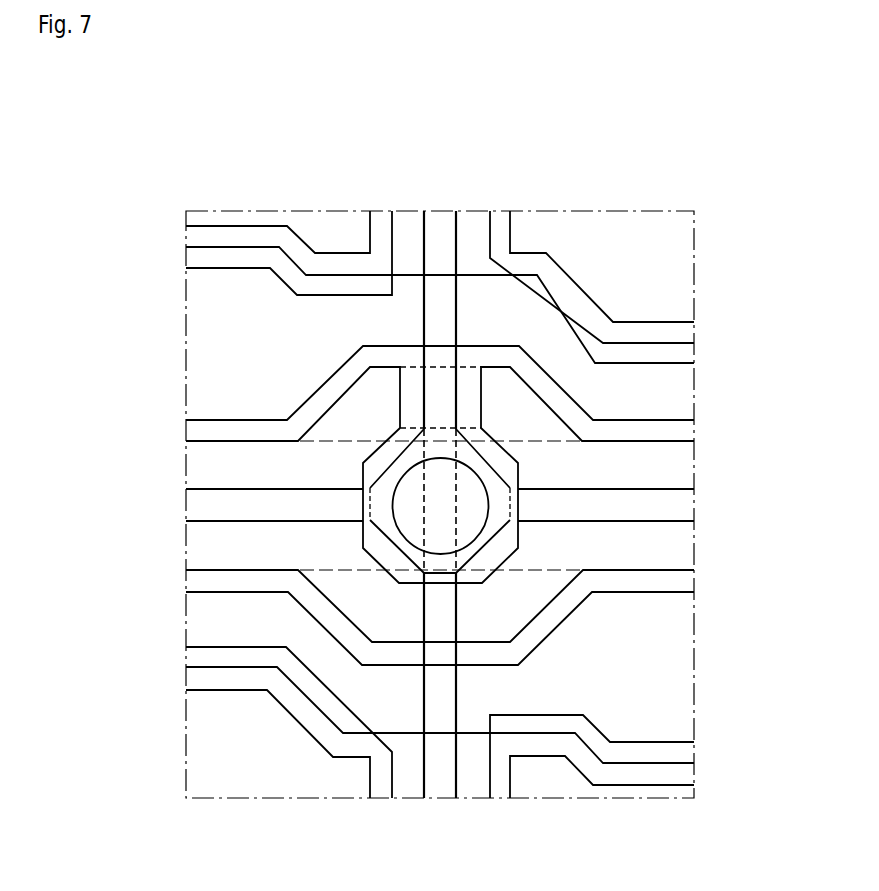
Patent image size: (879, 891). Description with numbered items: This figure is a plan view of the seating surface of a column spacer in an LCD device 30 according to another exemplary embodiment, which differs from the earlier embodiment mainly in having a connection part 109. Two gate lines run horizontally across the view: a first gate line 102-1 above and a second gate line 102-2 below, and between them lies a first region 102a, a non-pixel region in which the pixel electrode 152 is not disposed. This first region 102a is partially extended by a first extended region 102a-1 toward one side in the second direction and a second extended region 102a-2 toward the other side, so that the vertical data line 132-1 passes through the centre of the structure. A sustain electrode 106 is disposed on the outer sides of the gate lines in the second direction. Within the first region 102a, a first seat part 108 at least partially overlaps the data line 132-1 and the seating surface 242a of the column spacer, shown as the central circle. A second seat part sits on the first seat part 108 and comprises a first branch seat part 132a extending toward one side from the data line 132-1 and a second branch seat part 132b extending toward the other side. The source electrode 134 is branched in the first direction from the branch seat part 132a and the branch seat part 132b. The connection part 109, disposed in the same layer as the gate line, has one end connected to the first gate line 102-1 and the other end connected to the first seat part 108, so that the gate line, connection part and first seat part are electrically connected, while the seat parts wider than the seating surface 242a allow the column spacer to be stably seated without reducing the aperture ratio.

The LCD device 30 is at (466, 155).
The first region 102a is at (203, 468).
The first extended region 102a-1 is at (384, 377).
The second extended region 102a-2 is at (393, 620).
The first gate line 102-1 is at (200, 431).
The second gate line 102-2 is at (197, 580).
The sustain electrode 106 is at (193, 236).
The first seat part 108 is at (370, 453).
The connection part 109 is at (407, 400).
The data line 132-1 is at (443, 407).
The 2-1st seat part 132a is at (395, 528).
The 2-2nd seat part 132b is at (492, 520).
The source electrode 134 is at (200, 503).
The pixel electrode 152 is at (300, 213).
The seating surface 242a is at (474, 485).